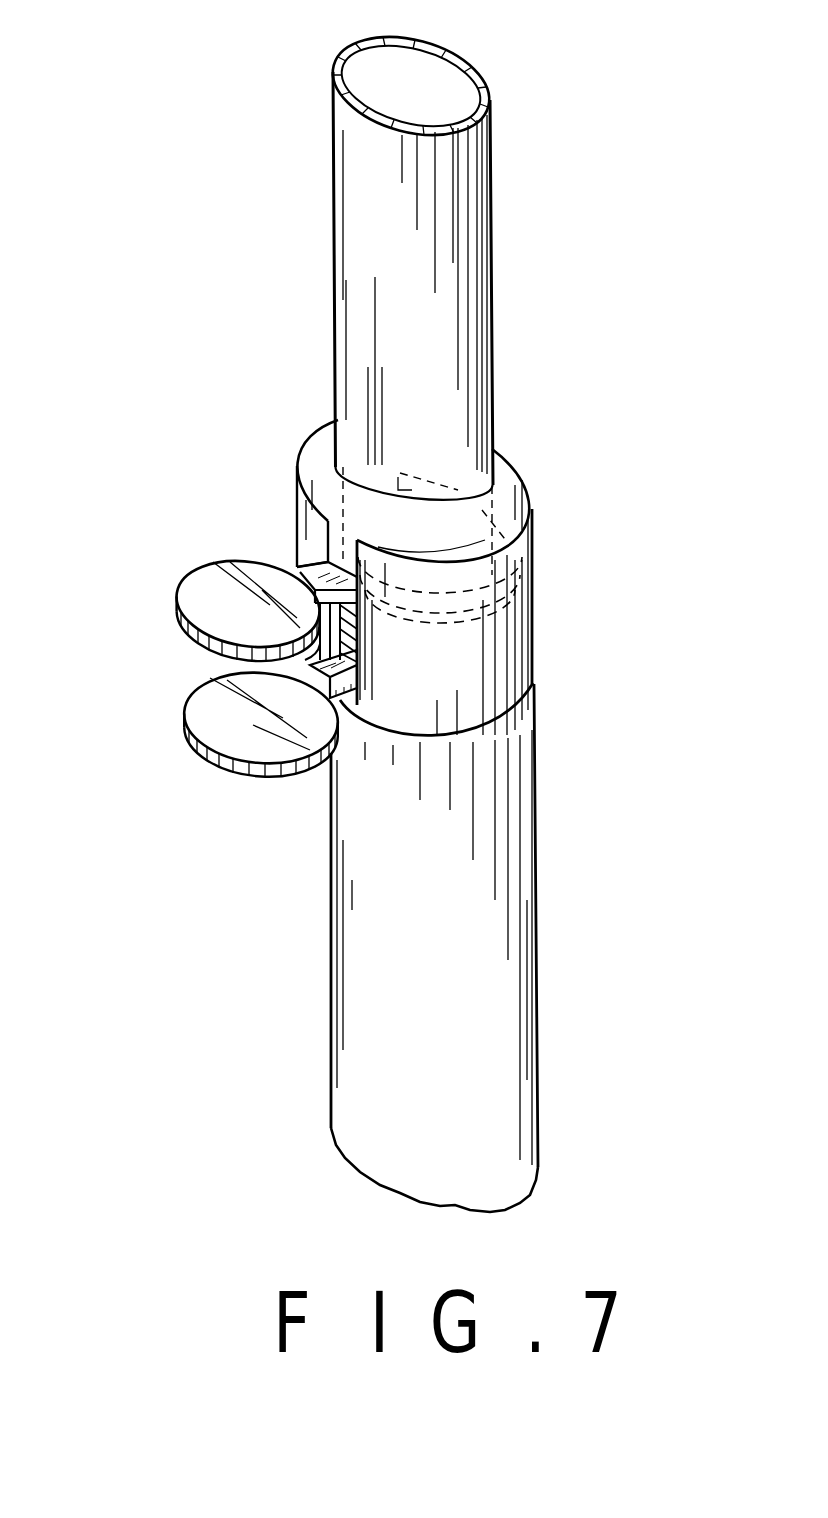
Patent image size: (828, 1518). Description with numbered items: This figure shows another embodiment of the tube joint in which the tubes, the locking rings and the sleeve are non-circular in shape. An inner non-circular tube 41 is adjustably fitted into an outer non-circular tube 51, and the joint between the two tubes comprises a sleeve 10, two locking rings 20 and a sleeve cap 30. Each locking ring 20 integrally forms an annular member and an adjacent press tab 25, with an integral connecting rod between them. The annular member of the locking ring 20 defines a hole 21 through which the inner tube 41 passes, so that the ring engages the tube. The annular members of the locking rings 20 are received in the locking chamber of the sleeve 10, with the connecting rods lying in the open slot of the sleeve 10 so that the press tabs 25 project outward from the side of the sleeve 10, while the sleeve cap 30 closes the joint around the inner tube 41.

The sleeve 10 is at (517, 686).
The locking ring 20 is at (250, 540).
The hole 21 is at (497, 586).
The press tab 25 is at (220, 596).
The sleeve cap 30 is at (317, 473).
The upper tube 41 is at (360, 337).
The lower tube 51 is at (356, 986).